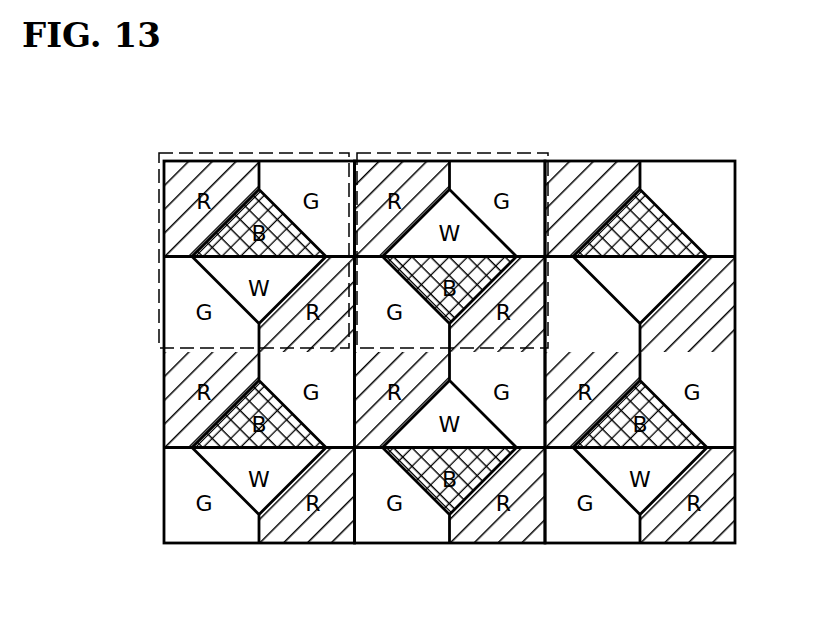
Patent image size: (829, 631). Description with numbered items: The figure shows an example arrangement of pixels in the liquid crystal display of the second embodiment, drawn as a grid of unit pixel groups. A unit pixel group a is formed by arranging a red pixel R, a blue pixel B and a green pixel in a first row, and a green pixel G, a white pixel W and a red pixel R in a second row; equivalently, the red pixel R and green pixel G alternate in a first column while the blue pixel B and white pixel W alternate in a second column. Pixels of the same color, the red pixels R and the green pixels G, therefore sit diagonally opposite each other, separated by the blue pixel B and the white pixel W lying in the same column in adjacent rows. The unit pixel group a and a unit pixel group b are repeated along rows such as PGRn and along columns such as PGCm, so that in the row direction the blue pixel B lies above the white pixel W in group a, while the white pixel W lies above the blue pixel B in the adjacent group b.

The unit pixel group a is at (284, 151).
The unit pixel group b is at (479, 151).
The row PGRn is at (392, 215).
The column PGCm is at (164, 558).
The red pixel R is at (592, 209).
The green pixel G is at (687, 209).
The blue pixel B is at (640, 223).
The white pixel W is at (640, 290).